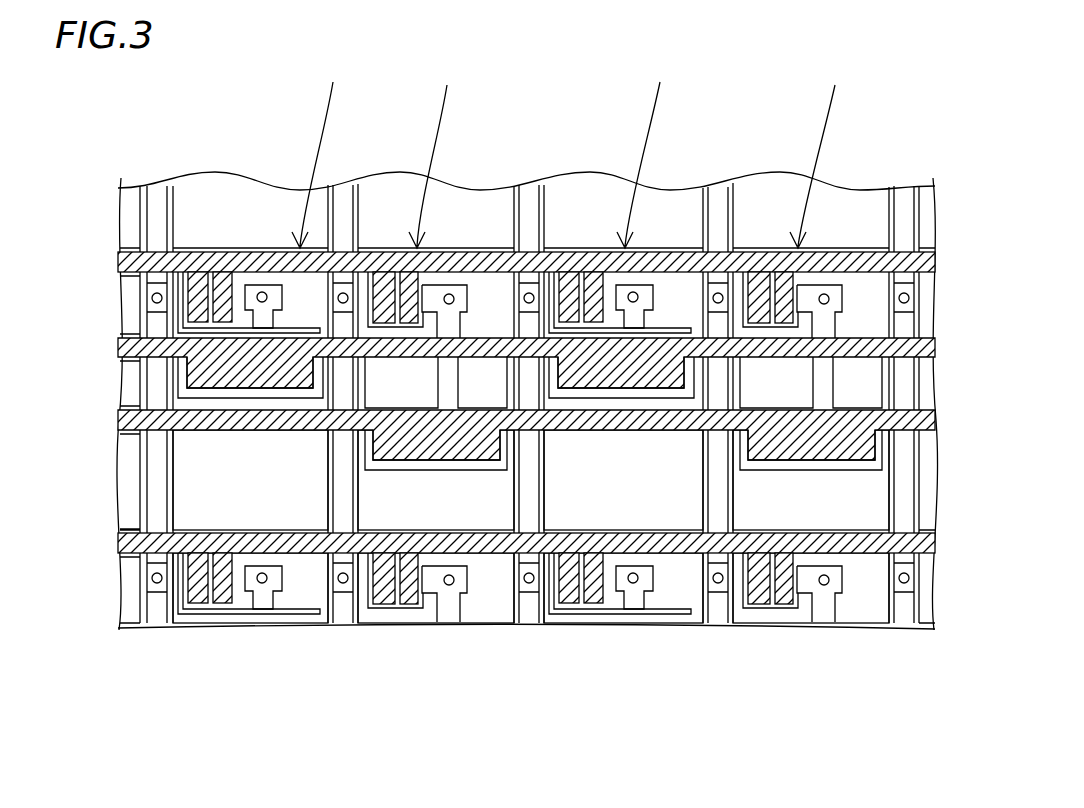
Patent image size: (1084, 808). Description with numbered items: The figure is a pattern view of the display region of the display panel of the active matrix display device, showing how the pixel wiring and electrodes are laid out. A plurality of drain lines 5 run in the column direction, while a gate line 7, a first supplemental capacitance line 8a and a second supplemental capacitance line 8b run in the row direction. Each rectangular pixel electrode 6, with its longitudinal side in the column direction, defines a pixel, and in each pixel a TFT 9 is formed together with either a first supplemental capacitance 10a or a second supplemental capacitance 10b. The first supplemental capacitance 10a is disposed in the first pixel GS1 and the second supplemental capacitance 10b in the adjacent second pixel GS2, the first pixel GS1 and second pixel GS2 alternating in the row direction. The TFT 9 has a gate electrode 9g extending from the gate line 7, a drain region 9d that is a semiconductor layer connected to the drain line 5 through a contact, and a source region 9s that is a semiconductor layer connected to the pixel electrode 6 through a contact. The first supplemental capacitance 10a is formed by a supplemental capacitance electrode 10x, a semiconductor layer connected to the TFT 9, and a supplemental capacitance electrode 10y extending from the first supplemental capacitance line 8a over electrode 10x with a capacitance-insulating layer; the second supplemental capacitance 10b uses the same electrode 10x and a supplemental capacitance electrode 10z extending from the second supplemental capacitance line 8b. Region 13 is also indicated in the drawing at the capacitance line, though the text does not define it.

The drain line 5 is at (158, 192).
The pixel electrode 6 is at (293, 600).
The gate line 7 is at (120, 262).
The first supplemental capacitance line 8a is at (120, 345).
The second supplemental capacitance line 8b is at (120, 418).
The TFT 9 is at (501, 354).
The drain region 9d is at (160, 283).
The gate electrode 9g is at (198, 280).
The source region 9s is at (263, 290).
The first supplemental capacitance 10a is at (277, 483).
The second supplemental capacitance 10b is at (475, 690).
The supplemental capacitance electrode 10x is at (198, 392).
The supplemental capacitance electrode 10y is at (250, 373).
The supplemental capacitance electrode 10z is at (448, 453).
The contact portion 13 is at (481, 338).
The first pixel GS1 is at (488, 152).
The second pixel GS2 is at (634, 153).